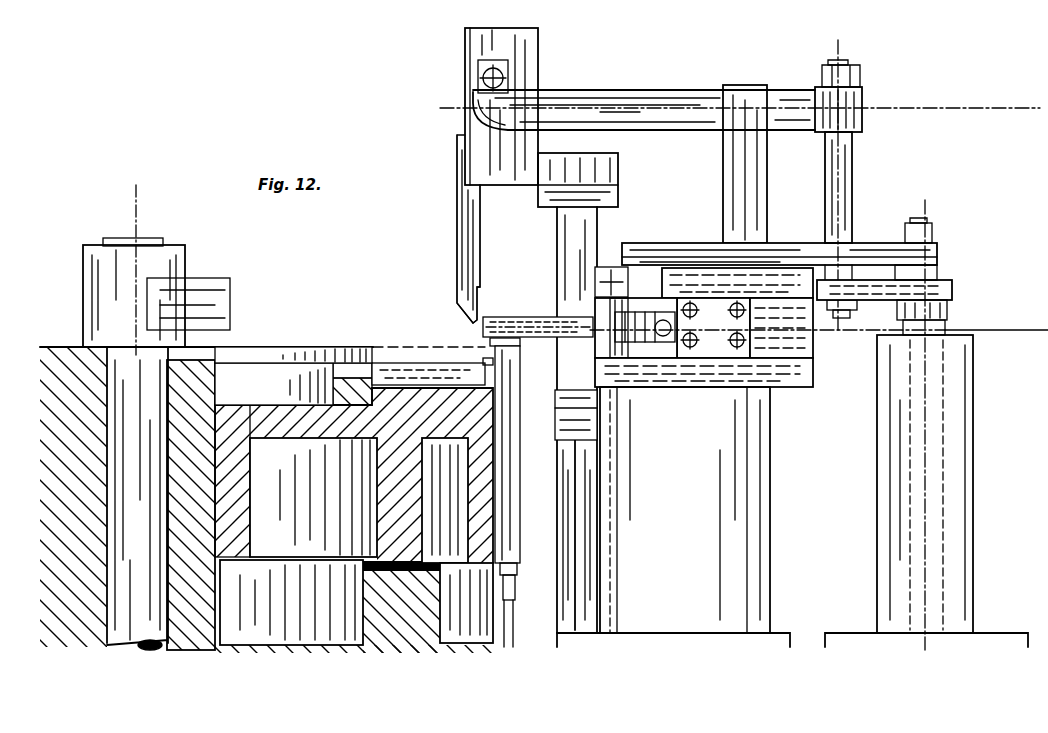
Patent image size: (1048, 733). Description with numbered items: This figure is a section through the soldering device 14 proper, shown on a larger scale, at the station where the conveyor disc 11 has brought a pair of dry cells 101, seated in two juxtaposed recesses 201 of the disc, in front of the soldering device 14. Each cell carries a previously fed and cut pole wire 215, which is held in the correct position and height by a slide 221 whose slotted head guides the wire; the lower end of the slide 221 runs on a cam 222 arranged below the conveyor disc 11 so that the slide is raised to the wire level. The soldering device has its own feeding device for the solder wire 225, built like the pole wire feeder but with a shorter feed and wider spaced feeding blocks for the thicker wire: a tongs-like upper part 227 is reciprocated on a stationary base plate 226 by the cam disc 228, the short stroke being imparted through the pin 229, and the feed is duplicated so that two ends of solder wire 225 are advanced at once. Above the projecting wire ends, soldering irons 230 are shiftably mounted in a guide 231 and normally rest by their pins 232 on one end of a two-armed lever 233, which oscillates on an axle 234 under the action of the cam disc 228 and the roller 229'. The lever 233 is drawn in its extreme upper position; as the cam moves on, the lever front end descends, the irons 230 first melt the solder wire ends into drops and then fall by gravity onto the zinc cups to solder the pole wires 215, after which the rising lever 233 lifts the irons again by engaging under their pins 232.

The conveyor disc 11 is at (290, 296).
The soldering device 14 is at (445, 315).
The dry cell 101 is at (396, 347).
The recess 201 is at (412, 360).
The pole wire 215 is at (511, 344).
The slide 221 is at (508, 390).
The cam 222 is at (506, 620).
The solder wire 225 is at (990, 328).
The stationary base plate 226 is at (700, 380).
The tongs-like upper part 227 is at (655, 310).
The cam disc 228 is at (887, 290).
The pin 229 is at (861, 185).
The roller 229' is at (946, 276).
The soldering iron 230 is at (466, 246).
The guide 231 is at (475, 101).
The pin 232 is at (478, 68).
The two-armed lever 233 is at (598, 97).
The axle 234 is at (749, 103).